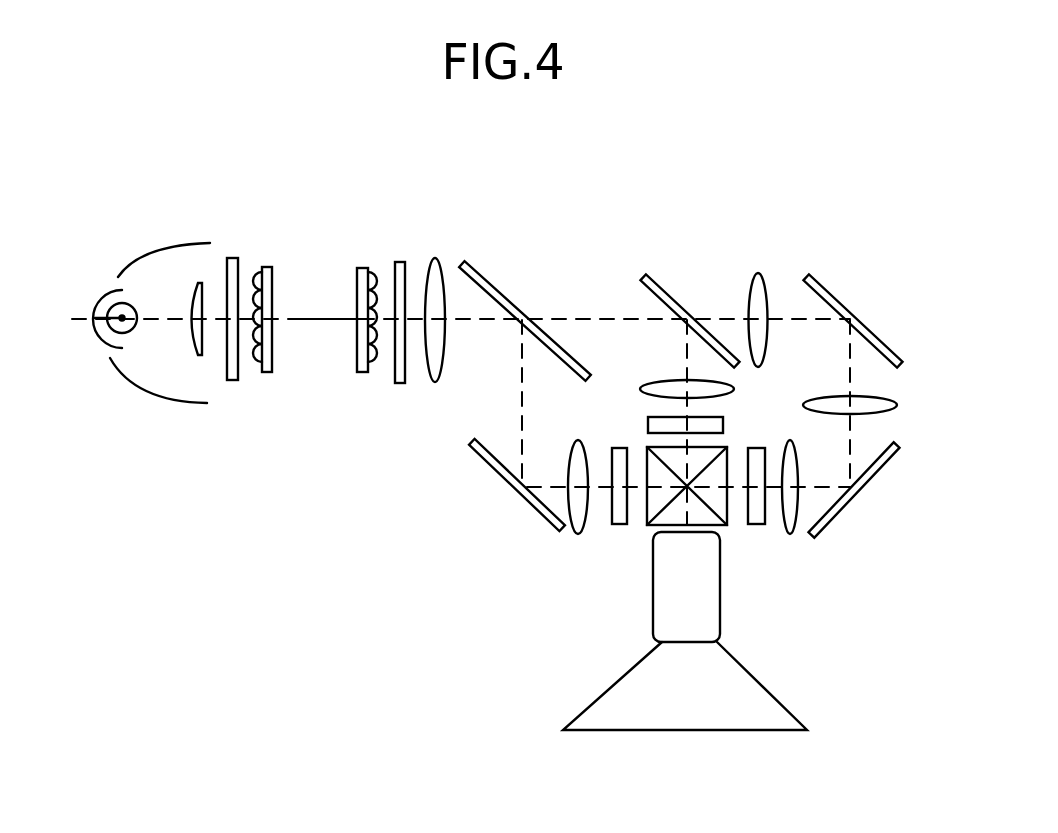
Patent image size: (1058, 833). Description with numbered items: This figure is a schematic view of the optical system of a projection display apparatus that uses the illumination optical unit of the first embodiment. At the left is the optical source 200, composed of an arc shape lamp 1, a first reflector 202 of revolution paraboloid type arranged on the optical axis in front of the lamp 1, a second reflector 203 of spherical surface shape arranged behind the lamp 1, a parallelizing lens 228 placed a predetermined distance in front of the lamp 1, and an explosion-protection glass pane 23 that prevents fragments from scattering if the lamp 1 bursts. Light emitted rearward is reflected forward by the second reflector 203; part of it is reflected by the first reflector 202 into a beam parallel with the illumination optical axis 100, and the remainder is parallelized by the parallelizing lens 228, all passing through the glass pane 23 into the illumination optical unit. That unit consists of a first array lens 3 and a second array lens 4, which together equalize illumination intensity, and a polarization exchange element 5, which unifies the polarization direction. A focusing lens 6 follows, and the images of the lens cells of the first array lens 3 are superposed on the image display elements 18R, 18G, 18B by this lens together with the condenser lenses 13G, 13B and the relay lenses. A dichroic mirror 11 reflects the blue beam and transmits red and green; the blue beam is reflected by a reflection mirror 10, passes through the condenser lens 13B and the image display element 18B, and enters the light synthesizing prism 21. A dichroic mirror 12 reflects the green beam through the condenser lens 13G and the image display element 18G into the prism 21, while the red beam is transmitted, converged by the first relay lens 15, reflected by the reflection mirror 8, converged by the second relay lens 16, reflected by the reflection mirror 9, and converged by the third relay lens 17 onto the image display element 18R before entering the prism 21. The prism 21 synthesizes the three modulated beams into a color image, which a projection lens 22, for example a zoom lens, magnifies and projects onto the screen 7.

The optical source 200 is at (67, 178).
The arc shape lamp 1 is at (133, 312).
The first reflector 202 is at (128, 278).
The second reflector 203 is at (100, 343).
The parallelizing lens 228 is at (193, 355).
The explosion-protection glass pane 23 is at (232, 258).
The first array lens 3 is at (270, 265).
The second array lens 4 is at (358, 268).
The polarization exchange element 5 is at (398, 385).
The focusing lens 6 is at (435, 258).
The illumination optical axis 100 is at (335, 320).
The dichroic mirror 11 is at (490, 272).
The dichroic mirror 12 is at (662, 282).
The first relay lens 15 is at (757, 270).
The reflection mirror 8 is at (828, 287).
The second relay lens 16 is at (892, 398).
The reflection mirror 9 is at (863, 486).
The reflection mirror 10 is at (512, 490).
The condenser lens 13G is at (658, 380).
The condenser lens 13B is at (577, 527).
The third relay lens 17 is at (795, 530).
The image display element 18G is at (643, 413).
The image display element 18B is at (617, 527).
The image display element 18R is at (762, 527).
The light synthesizing prism 21 is at (653, 520).
The projection lens 22 is at (720, 630).
The screen 7 is at (803, 727).